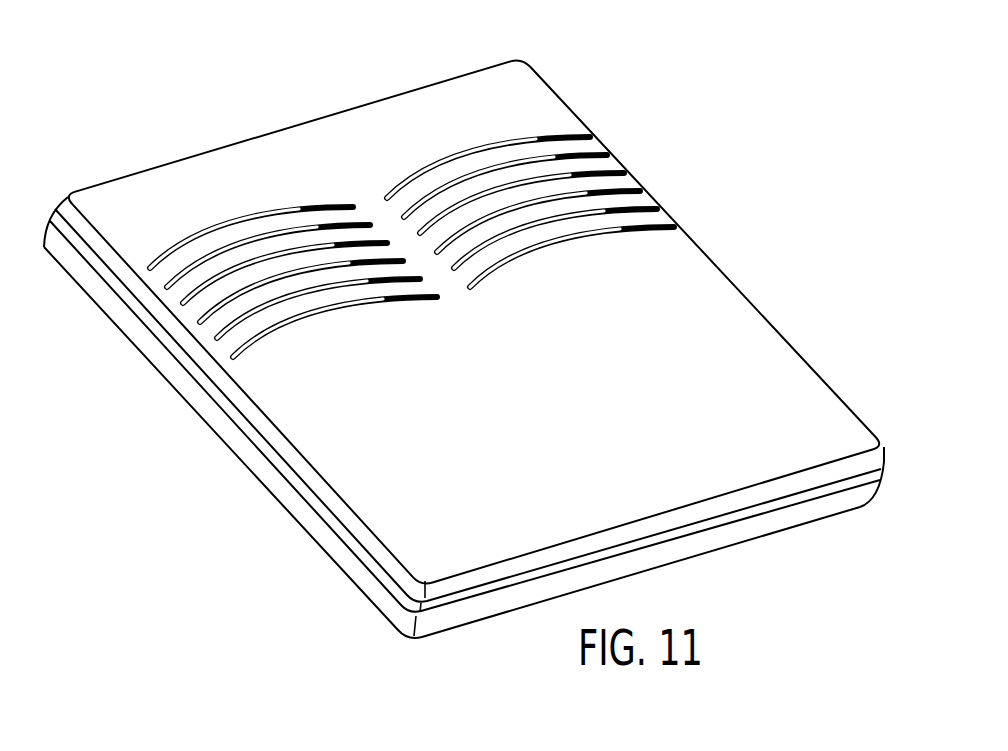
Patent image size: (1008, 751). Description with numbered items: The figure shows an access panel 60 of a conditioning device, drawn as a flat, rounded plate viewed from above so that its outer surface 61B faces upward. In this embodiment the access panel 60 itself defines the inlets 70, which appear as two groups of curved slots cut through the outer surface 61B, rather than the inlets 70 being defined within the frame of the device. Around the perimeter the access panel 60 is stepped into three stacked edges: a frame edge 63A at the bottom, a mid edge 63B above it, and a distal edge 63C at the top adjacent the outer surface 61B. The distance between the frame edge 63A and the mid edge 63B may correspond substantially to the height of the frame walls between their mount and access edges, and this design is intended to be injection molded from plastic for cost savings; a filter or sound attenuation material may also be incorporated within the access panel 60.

The access panel 60 is at (464, 348).
The outer surface 61B is at (737, 424).
The frame edge 63A is at (403, 622).
The mid edge 63B is at (380, 577).
The distal edge 63C is at (352, 530).
The inlets 70 is at (588, 138).